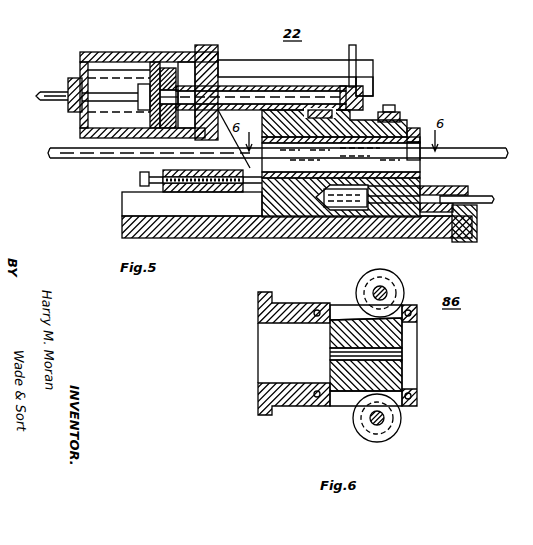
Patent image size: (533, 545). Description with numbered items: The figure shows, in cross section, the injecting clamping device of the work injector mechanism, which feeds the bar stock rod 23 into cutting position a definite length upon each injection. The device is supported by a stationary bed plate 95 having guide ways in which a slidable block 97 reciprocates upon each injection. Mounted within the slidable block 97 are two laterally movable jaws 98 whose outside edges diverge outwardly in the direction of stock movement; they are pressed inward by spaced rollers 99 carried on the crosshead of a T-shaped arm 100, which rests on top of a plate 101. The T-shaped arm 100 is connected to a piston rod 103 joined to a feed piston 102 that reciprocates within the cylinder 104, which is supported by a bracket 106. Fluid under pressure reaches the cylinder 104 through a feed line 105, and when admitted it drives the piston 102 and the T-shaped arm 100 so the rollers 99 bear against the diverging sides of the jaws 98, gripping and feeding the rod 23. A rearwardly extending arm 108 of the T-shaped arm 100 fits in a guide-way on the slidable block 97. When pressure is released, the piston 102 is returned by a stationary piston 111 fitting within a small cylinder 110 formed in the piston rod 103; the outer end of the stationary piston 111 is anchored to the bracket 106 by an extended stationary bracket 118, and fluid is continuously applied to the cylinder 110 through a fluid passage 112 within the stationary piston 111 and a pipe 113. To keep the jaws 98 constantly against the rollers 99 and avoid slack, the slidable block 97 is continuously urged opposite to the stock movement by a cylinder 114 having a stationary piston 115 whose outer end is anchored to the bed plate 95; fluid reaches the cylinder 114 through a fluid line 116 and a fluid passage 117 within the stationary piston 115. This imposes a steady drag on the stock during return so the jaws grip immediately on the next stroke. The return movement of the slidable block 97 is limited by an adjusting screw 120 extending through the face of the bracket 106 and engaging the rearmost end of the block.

In FIG. 5, the rod 23 is at (76, 160).
In FIG. 5, the stationary bed plate 95 is at (122, 222).
In FIG. 5, the slidable block 97 is at (266, 236).
In FIG. 6, the slidable block 97 is at (300, 303).
In FIG. 6, the laterally movable jaws 98 is at (336, 318).
In FIG. 6, the rollers 99 is at (400, 285).
In FIG. 5, the T-shaped arm 100 is at (402, 112).
In FIG. 5, the plate 101 is at (430, 135).
In FIG. 5, the feed piston 102 is at (172, 58).
In FIG. 5, the piston rod 103 is at (176, 104).
In FIG. 5, the cylinder 104 is at (118, 52).
In FIG. 5, the feed line 105 is at (46, 92).
In FIG. 5, the bracket 106 is at (214, 45).
In FIG. 5, the rearwardly extending arm 108 is at (360, 118).
In FIG. 5, the cylinder 110 is at (258, 86).
In FIG. 5, the stationary piston 111 is at (348, 86).
In FIG. 5, the fluid passage 112 is at (307, 108).
In FIG. 5, the pipe 113 is at (357, 48).
In FIG. 5, the cylinder 114 is at (330, 210).
In FIG. 5, the stationary piston 115 is at (456, 190).
In FIG. 5, the fluid line 116 is at (492, 203).
In FIG. 5, the fluid passage 117 is at (466, 242).
In FIG. 5, the extended stationary bracket 118 is at (373, 65).
In FIG. 5, the adjusting screw 120 is at (140, 179).